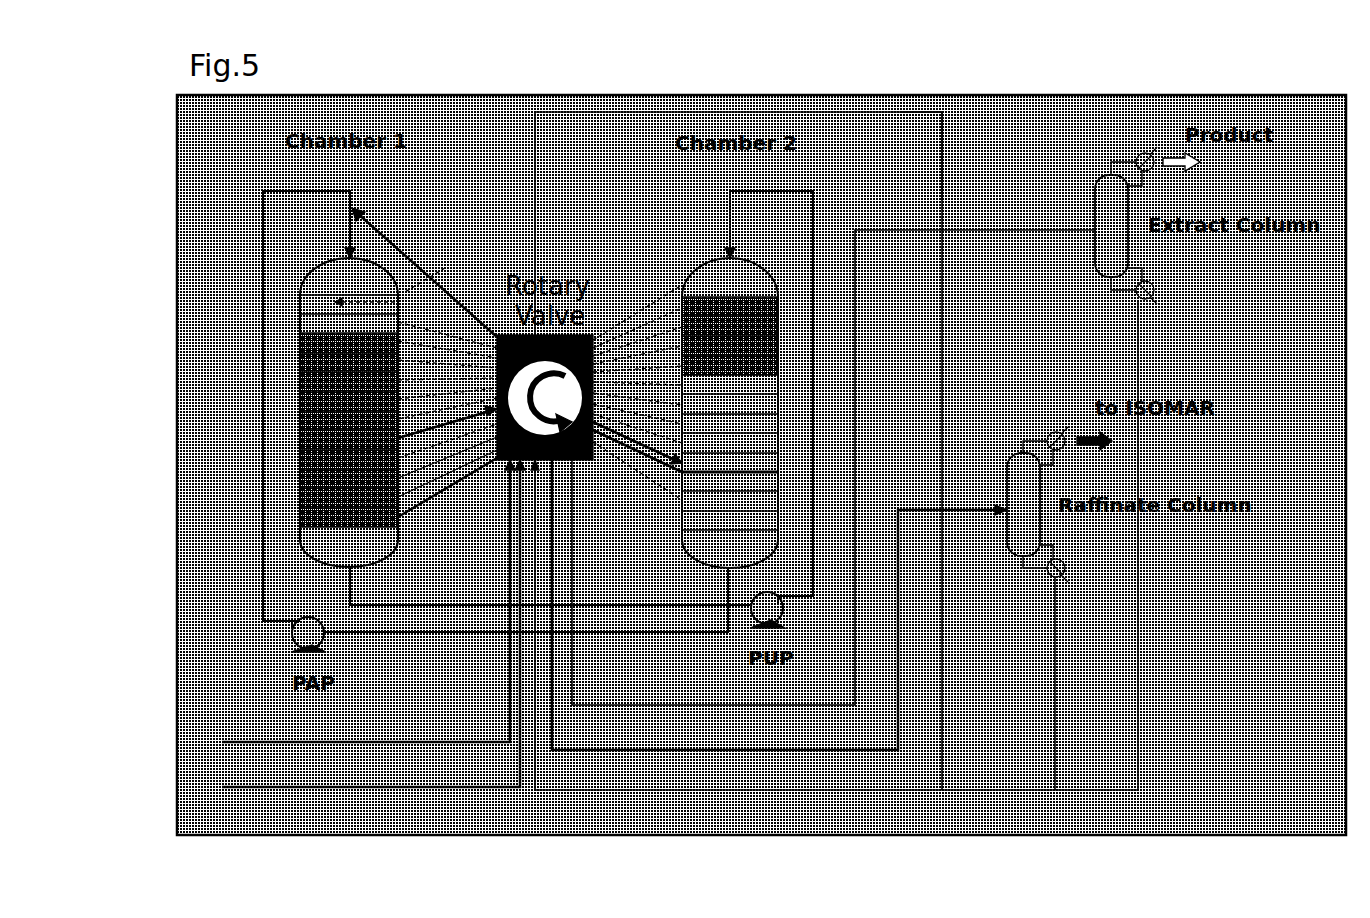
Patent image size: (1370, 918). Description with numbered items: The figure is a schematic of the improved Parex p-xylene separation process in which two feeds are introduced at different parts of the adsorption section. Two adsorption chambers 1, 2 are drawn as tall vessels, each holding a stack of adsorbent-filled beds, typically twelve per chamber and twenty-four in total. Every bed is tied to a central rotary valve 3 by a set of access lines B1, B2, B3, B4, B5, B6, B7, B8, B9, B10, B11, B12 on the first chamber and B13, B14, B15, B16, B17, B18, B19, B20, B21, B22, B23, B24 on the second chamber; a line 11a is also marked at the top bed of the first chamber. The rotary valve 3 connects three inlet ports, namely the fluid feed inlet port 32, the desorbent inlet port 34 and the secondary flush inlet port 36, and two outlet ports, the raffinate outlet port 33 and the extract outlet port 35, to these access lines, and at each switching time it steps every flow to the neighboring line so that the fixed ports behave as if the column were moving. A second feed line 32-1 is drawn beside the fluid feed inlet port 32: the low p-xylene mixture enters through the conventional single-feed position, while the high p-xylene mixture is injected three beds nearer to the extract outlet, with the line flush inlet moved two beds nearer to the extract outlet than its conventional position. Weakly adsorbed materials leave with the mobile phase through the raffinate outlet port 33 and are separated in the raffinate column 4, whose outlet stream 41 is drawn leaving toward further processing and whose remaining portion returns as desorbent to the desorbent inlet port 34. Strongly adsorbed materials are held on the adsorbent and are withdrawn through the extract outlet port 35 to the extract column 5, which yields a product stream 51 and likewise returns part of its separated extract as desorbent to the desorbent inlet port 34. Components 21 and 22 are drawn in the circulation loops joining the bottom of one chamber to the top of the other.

The adsorption chamber 1 is at (380, 547).
The adsorption chamber 2 is at (680, 540).
The rotary valve 3 is at (497, 462).
The raffinate column 4 is at (1005, 458).
The extract column 5 is at (1093, 185).
The bed line of first bed 11a is at (399, 280).
The pump PUP 21 is at (777, 610).
The pump PAP 22 is at (320, 634).
The fluid feed inlet port 32 is at (373, 623).
The feed 2 line 32-1 is at (368, 601).
The raffinate outlet port 33 is at (779, 605).
The desorbent inlet port 34 is at (834, 545).
The extract outlet port 35 is at (852, 690).
The secondary flush inlet port 36 is at (921, 156).
The raffinate product line to ISOMAR 41 is at (1103, 441).
The product line 51 is at (1191, 162).
The access line B1 is at (424, 272).
The access line B2 is at (447, 329).
The access line B3 is at (447, 342).
The access line B4 is at (447, 357).
The access line B5 is at (447, 368).
The access line B6 is at (447, 388).
The access line B7 is at (447, 406).
The access line B8 is at (447, 422).
The access line B9 is at (447, 441).
The access line B10 is at (447, 456).
The access line B11 is at (447, 473).
The access line B12 is at (447, 487).
The access line B13 is at (637, 300).
The access line B14 is at (637, 328).
The access line B15 is at (637, 341).
The access line B16 is at (637, 356).
The access line B17 is at (637, 368).
The access line B18 is at (637, 387).
The access line B19 is at (637, 401).
The access line B20 is at (637, 414).
The access line B21 is at (637, 428).
The access line B22 is at (637, 443).
The access line B23 is at (637, 454).
The access line B24 is at (637, 471).